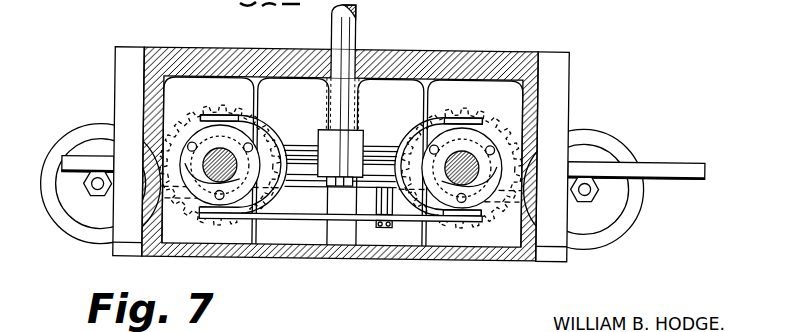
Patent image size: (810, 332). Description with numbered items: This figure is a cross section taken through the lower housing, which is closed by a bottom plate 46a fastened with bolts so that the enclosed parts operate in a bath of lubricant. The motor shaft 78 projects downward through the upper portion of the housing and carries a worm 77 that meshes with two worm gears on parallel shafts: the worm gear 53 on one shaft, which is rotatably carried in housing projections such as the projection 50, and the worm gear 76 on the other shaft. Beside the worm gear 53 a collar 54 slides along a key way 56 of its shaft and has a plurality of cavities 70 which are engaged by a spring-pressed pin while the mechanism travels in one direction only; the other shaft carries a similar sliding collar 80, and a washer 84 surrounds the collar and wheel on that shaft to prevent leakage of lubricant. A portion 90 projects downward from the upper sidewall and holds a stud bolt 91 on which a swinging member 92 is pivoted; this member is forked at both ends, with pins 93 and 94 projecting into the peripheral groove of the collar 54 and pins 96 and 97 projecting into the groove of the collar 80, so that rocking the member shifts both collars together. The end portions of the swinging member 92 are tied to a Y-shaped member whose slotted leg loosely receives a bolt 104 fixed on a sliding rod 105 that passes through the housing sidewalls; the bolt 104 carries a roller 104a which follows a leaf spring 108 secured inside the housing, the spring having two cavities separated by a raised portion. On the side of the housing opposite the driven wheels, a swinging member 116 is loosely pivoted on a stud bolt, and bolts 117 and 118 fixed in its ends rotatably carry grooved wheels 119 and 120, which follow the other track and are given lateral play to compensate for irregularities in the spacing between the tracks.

The bottom plate 46a is at (502, 258).
The projection 50 is at (427, 100).
The worm gear 53 is at (459, 98).
The collar 54 is at (493, 126).
The key way 56 is at (257, 166).
The cavities 70 is at (186, 167).
The worm gear 76 is at (208, 99).
The worm 77 is at (386, 148).
The motor shaft 78 is at (343, 33).
The collar 80 is at (238, 133).
The washer 84 is at (255, 114).
The portion 90 is at (333, 99).
The stud bolt 91 is at (342, 182).
The swinging member 92 is at (310, 162).
The pin 93 is at (200, 133).
The pin 94 is at (203, 200).
The pin 96 is at (463, 126).
The pin 97 is at (461, 228).
The bolt 104 is at (383, 226).
The roller 104a is at (379, 197).
The sliding rod 105 is at (643, 163).
The leaf spring 108 is at (300, 212).
The swinging member 116 is at (592, 154).
The bolt 117 is at (96, 193).
The bolt 118 is at (587, 216).
The grooved wheel 119 is at (82, 230).
The grooved wheel 120 is at (621, 233).